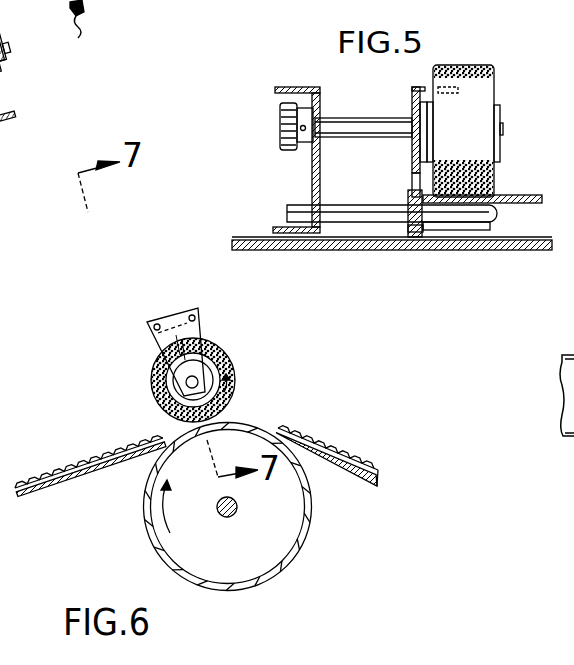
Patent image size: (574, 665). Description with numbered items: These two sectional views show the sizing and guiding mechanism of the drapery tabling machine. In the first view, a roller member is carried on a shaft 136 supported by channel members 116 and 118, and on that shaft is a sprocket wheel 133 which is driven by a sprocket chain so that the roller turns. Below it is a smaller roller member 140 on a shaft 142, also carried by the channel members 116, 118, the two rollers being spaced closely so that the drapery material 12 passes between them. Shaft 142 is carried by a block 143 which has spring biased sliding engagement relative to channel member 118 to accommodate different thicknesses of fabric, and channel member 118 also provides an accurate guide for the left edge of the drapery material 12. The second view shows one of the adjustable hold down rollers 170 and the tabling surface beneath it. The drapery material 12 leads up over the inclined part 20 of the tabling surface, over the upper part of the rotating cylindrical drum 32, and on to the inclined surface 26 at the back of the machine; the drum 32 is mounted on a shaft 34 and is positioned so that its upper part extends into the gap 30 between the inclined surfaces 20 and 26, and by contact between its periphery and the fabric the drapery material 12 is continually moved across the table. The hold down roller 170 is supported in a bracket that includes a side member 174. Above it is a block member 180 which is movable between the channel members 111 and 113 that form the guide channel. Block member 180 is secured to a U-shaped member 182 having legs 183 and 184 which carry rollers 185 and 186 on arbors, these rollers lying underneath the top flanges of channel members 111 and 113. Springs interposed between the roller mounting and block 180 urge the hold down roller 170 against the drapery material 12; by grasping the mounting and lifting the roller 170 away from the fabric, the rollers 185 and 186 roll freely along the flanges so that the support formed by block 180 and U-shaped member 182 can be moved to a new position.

In FIG. 5, the drapery material 12 is at (513, 193).
In FIG. 6, the inclined part 20 is at (77, 468).
In FIG. 6, the inclined surface 26 is at (363, 482).
In FIG. 6, the gap 30 is at (292, 437).
In FIG. 6, the cylindrical drum 32 is at (162, 540).
In FIG. 5, the shaft 34 is at (477, 68).
In FIG. 6, the shaft 34 is at (237, 512).
In FIG. 6, the channel member 111 is at (132, 243).
In FIG. 6, the channel member 113 is at (180, 268).
In FIG. 5, the channel member 116 is at (280, 88).
In FIG. 5, the channel member 118 is at (417, 143).
In FIG. 5, the sprocket wheel 133 is at (283, 150).
In FIG. 5, the shaft 136 is at (345, 123).
In FIG. 5, the roller member 140 is at (488, 220).
In FIG. 5, the shaft 142 is at (387, 212).
In FIG. 5, the block 143 is at (407, 190).
In FIG. 6, the hold down roller 170 is at (222, 367).
In FIG. 6, the side member 174 is at (195, 330).
In FIG. 6, the block member 180 is at (133, 250).
In FIG. 6, the U-shaped member 182 is at (110, 212).
In FIG. 6, the leg 183 is at (92, 230).
In FIG. 6, the leg 184 is at (197, 170).
In FIG. 6, the roller 185 is at (105, 257).
In FIG. 6, the roller 186 is at (186, 225).